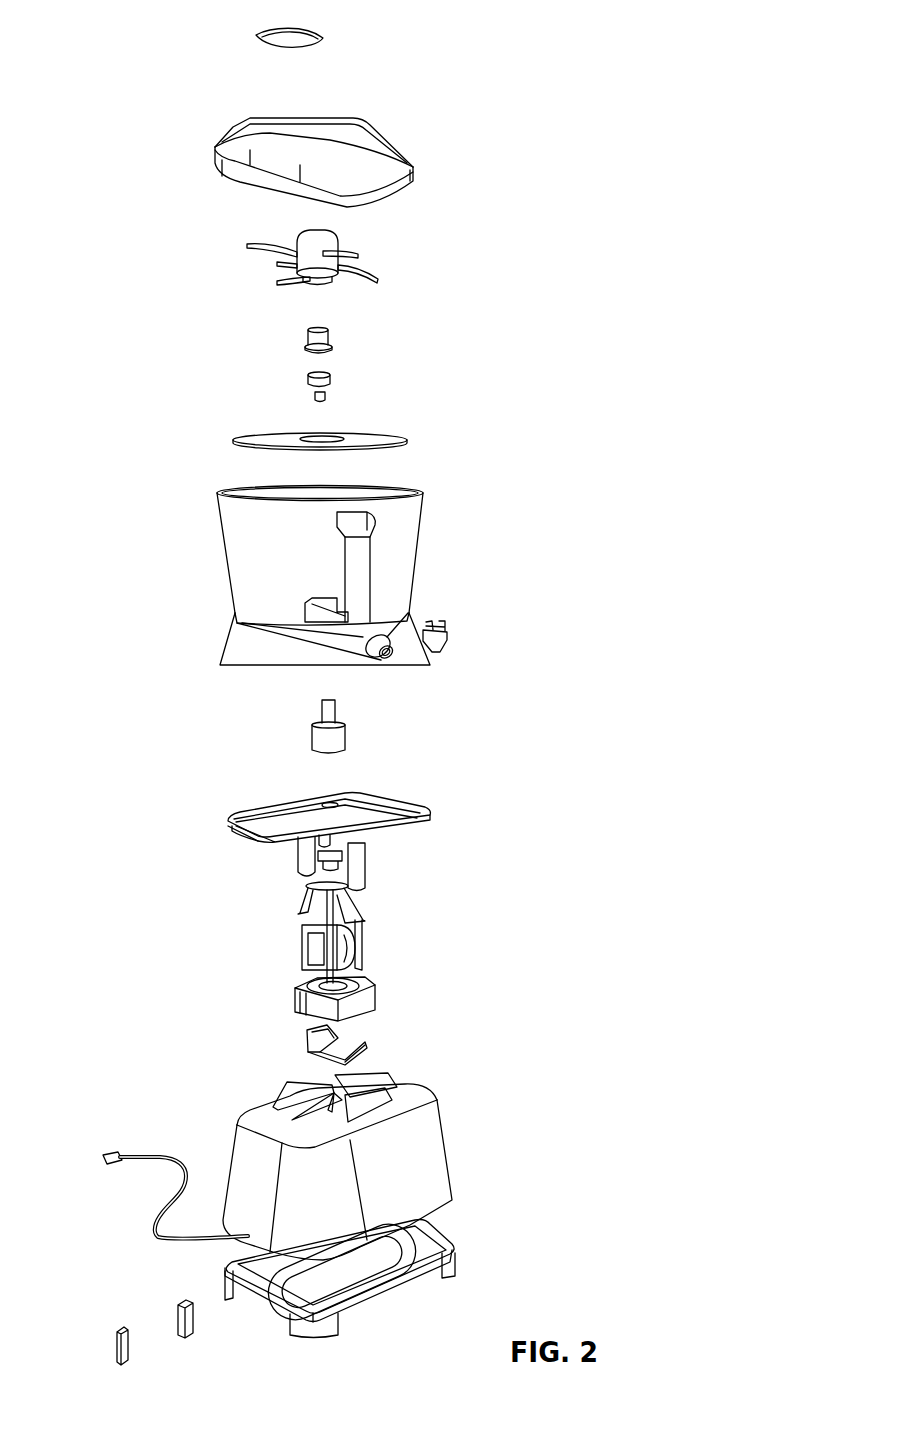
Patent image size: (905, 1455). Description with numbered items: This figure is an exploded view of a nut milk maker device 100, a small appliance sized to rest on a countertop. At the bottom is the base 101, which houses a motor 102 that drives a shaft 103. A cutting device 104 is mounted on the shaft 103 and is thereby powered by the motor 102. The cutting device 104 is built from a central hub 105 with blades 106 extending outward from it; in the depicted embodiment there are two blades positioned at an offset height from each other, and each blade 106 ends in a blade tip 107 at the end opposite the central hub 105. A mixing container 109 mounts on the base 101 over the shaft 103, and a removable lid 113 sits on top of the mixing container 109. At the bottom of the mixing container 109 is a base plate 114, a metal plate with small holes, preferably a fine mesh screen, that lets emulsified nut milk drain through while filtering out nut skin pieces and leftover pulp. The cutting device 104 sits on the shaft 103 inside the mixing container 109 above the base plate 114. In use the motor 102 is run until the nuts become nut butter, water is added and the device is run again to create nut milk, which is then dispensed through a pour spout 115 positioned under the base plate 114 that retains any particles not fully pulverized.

The nut milk maker device 100 is at (142, 48).
The base 101 is at (428, 1155).
The motor 102 is at (437, 792).
The shaft 103 is at (335, 733).
The cutting device 104 is at (373, 264).
The central hub 105 is at (340, 234).
The blade 106 is at (297, 283).
The blade tip 107 is at (237, 243).
The mixing container 109 is at (423, 543).
The removable lid 113 is at (383, 140).
The base plate 114 is at (390, 438).
The pour spout 115 is at (447, 647).